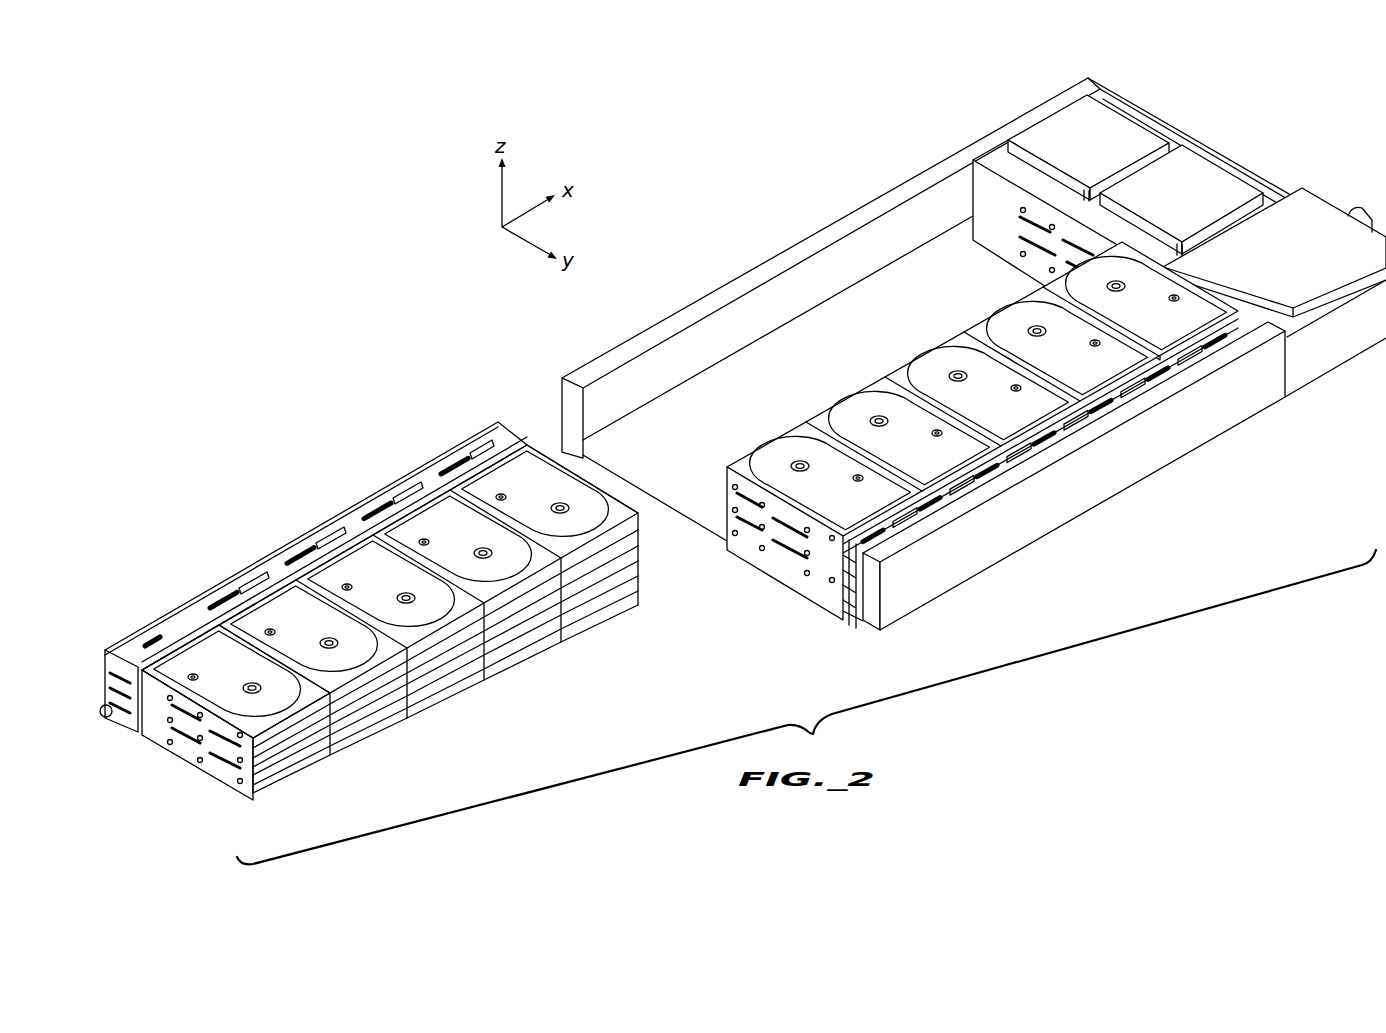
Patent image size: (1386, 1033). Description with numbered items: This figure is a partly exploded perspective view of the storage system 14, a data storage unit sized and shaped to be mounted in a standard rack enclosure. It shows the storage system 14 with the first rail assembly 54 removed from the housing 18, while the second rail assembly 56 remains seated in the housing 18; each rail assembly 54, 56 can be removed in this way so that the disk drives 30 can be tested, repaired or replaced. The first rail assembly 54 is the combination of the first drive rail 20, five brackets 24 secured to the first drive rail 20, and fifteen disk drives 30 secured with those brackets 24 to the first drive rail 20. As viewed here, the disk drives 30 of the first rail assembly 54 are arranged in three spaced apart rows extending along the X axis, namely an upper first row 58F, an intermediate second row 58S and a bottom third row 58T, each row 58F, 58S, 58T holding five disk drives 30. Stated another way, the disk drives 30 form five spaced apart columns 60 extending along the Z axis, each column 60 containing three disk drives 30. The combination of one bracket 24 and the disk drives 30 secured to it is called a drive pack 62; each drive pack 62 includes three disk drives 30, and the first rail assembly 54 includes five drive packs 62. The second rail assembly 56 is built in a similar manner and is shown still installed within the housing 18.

The storage system 14 is at (997, 116).
The housing 18 is at (735, 278).
The first drive rail 20 is at (344, 518).
The brackets 24 is at (283, 581).
The disk drives 30 is at (207, 620).
The first rail assembly 54 is at (293, 456).
The second rail assembly 56 is at (1003, 405).
The first row 58F is at (646, 518).
The second row 58S is at (647, 545).
The third row 58T is at (647, 566).
The columns 60 is at (297, 765).
The drive pack 62 is at (199, 770).